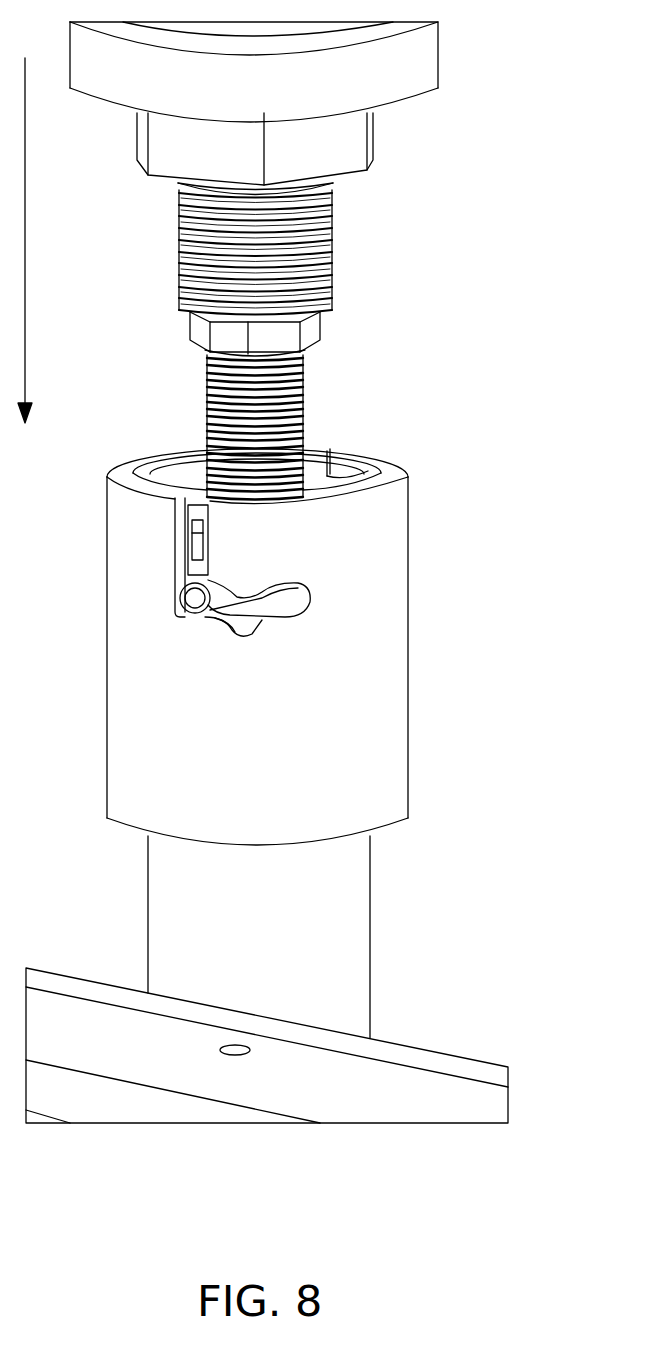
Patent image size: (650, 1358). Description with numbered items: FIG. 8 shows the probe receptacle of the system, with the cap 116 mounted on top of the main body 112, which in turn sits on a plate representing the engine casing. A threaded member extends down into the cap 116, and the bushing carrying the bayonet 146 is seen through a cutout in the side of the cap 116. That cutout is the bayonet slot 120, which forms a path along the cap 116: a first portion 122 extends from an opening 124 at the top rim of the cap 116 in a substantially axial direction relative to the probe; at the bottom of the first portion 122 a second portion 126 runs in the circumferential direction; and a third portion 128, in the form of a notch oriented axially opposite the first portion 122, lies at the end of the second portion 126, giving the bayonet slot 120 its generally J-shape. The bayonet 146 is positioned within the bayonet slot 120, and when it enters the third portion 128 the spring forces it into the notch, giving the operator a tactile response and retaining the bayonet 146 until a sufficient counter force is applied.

The main body 112 is at (371, 930).
The cap 116 is at (107, 788).
The bayonet slot 120 is at (267, 612).
The first portion 122 is at (172, 558).
The opening 124 is at (200, 497).
The second portion 126 is at (225, 632).
The third portion 128 is at (307, 598).
The bayonet 146 is at (192, 598).